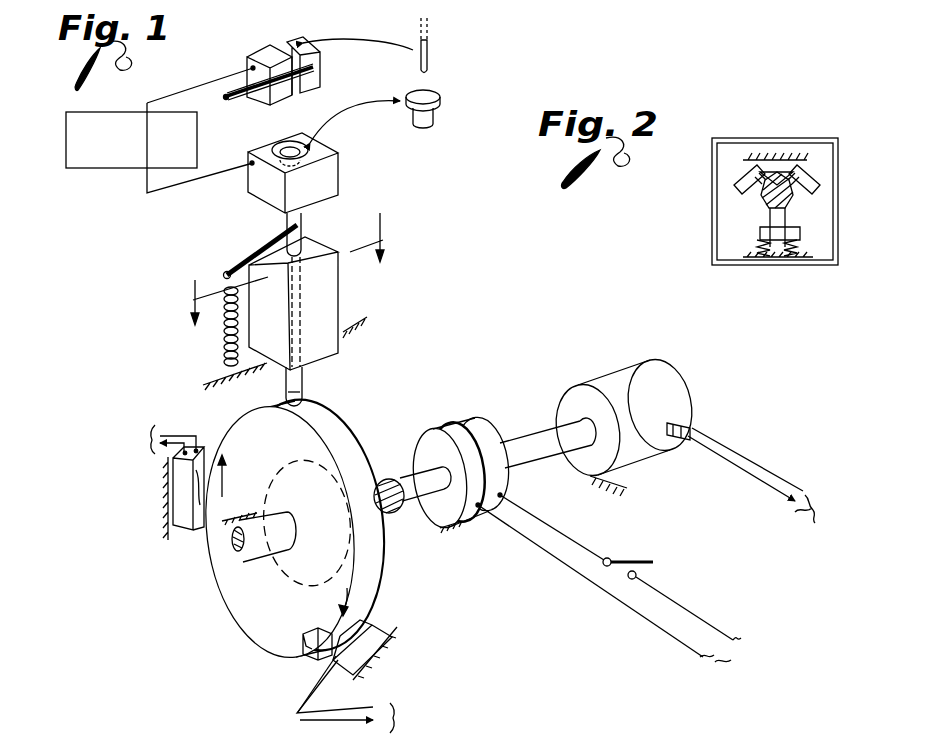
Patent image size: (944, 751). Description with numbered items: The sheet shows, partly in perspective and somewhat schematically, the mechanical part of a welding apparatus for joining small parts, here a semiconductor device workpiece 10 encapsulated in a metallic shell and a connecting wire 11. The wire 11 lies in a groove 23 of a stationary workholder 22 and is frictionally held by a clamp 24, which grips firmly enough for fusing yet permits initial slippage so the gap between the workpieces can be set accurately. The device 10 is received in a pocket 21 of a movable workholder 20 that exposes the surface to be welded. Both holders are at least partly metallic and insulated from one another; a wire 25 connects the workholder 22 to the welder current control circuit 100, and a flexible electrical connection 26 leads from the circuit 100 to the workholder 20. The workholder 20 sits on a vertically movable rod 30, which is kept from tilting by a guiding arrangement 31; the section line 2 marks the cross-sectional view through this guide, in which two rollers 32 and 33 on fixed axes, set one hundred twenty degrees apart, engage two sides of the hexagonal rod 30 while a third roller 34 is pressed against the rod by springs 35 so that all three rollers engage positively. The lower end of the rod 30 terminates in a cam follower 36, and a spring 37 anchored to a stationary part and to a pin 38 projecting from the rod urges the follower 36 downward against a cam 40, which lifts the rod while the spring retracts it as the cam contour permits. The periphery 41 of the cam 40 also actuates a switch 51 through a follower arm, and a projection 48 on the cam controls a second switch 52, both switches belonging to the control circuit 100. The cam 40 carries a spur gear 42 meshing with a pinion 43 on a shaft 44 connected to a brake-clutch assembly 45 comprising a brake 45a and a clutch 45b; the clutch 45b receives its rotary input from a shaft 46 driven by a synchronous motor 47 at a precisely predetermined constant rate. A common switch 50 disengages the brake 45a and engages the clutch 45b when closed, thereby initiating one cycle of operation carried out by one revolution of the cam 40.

In FIG. 1, the welder current control circuit 100 is at (120, 168).
In FIG. 1, the wire 25 is at (197, 90).
In FIG. 1, the flexible electrical connection 26 is at (213, 177).
In FIG. 1, the groove 23 is at (287, 48).
In FIG. 1, the stationary workholder 22 is at (318, 58).
In FIG. 1, the clamp 24 is at (247, 100).
In FIG. 1, the connecting wire 11 is at (429, 52).
In FIG. 1, the semiconductor device workpiece 10 is at (430, 100).
In FIG. 1, the workholder 20 is at (327, 182).
In FIG. 1, the pocket 21 is at (312, 144).
In FIG. 1, the rod 30 is at (302, 215).
In FIG. 2, the rod 30 is at (797, 205).
In FIG. 1, the cam follower 36 is at (307, 390).
In FIG. 1, the guiding arrangement 31 is at (330, 315).
In FIG. 1, the pin 38 is at (250, 257).
In FIG. 1, the spring 37 is at (227, 333).
In FIG. 1, the section line 2 is at (289, 269).
In FIG. 1, the cam 40 is at (350, 433).
In FIG. 1, the periphery 41 is at (327, 430).
In FIG. 1, the spur gear 42 is at (367, 477).
In FIG. 1, the pinion 43 is at (382, 530).
In FIG. 1, the shaft 44 is at (417, 490).
In FIG. 1, the brake-clutch assembly 45 is at (494, 437).
In FIG. 1, the brake 45a is at (443, 428).
In FIG. 1, the clutch 45b is at (482, 425).
In FIG. 1, the shaft 46 is at (536, 440).
In FIG. 1, the synchronous motor 47 is at (630, 377).
In FIG. 1, the switch 50 is at (633, 560).
In FIG. 1, the switch 51 is at (180, 497).
In FIG. 1, the projection 48 is at (300, 632).
In FIG. 1, the second switch 52 is at (377, 623).
In FIG. 2, the springs 35 is at (750, 250).
In FIG. 2, the roller 32 is at (730, 178).
In FIG. 2, the roller 33 is at (817, 173).
In FIG. 2, the third roller 34 is at (780, 233).